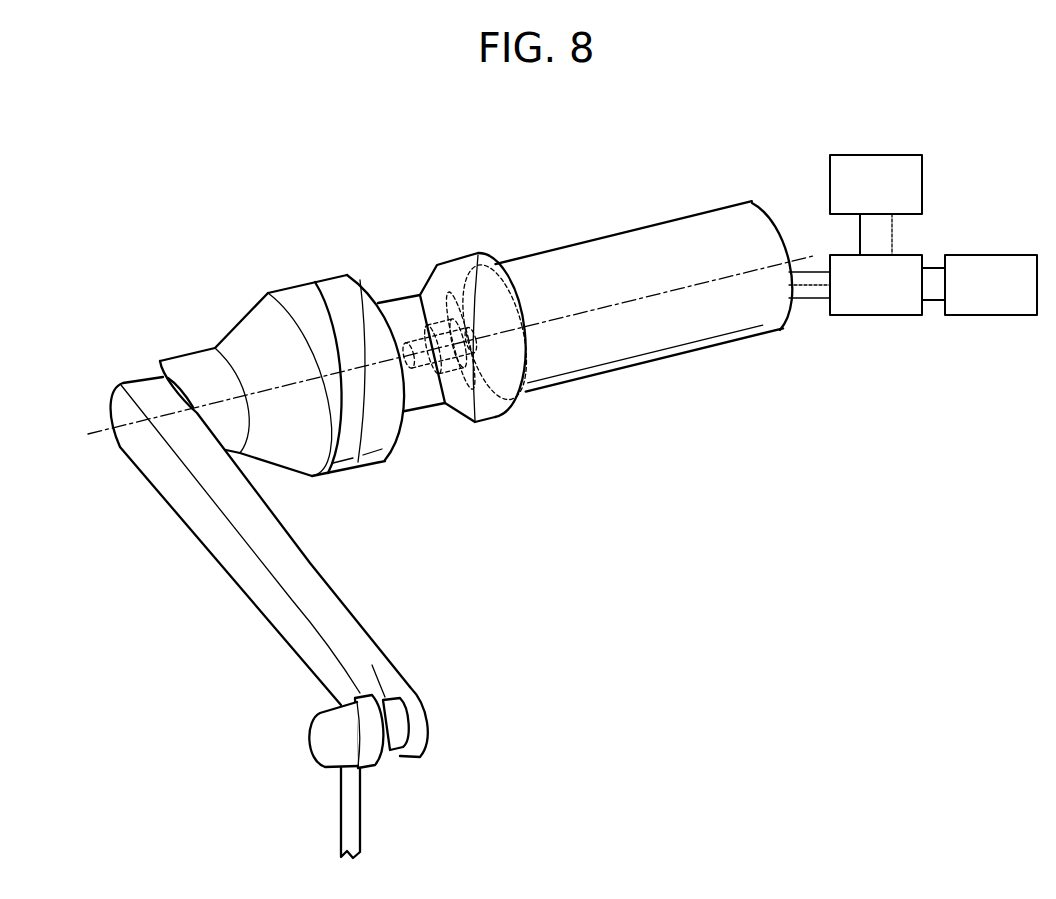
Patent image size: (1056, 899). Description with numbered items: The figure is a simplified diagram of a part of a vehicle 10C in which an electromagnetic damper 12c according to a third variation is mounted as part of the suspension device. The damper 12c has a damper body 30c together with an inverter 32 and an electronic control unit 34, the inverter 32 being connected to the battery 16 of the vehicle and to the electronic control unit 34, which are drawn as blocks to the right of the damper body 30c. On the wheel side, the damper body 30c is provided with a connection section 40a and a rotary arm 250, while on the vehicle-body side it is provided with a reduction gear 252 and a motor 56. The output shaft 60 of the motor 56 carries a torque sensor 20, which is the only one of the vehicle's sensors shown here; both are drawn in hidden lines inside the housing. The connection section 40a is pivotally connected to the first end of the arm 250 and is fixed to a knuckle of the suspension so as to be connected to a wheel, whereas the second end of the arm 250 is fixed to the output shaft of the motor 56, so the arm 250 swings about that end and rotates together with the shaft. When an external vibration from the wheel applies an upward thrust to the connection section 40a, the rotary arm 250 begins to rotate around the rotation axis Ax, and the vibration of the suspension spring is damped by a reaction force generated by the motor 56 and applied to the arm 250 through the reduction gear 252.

The vehicle 10C is at (327, 209).
The reduction gear 252 is at (282, 337).
The output shaft 60 is at (413, 347).
The torque sensor 20 is at (445, 367).
The electromagnetic damper 12c is at (607, 228).
The damper body 30c is at (575, 383).
The motor 56 is at (667, 340).
The electronic control unit 34 is at (900, 155).
The inverter 32 is at (898, 316).
The battery 16 is at (1018, 255).
The rotary arm 250 is at (240, 575).
The connection section 40a is at (357, 807).
The rotation axis Ax is at (435, 351).